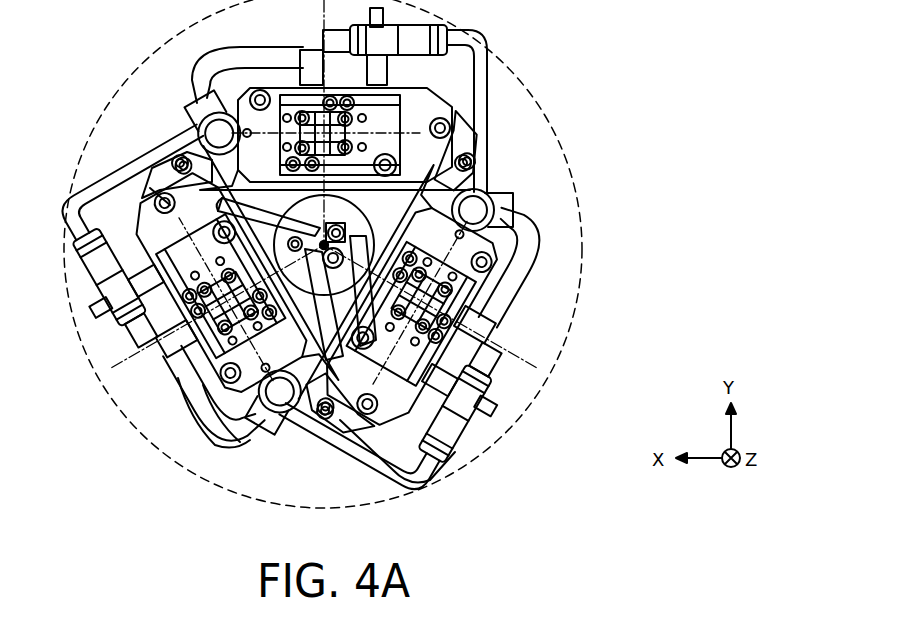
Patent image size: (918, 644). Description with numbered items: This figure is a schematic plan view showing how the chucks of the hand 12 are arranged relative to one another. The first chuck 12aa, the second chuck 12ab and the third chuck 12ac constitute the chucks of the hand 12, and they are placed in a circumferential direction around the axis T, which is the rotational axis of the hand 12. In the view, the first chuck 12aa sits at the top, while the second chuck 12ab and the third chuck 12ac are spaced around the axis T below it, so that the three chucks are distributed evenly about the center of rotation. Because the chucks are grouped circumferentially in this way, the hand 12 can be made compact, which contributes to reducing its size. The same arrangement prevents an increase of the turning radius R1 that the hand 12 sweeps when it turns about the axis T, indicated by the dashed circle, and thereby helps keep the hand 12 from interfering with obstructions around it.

The hand 12 is at (566, 57).
The first chuck 12aa is at (270, 95).
The second chuck 12ab is at (189, 354).
The third chuck 12ac is at (483, 289).
The axis T is at (326, 244).
The turning radius R1 is at (578, 192).